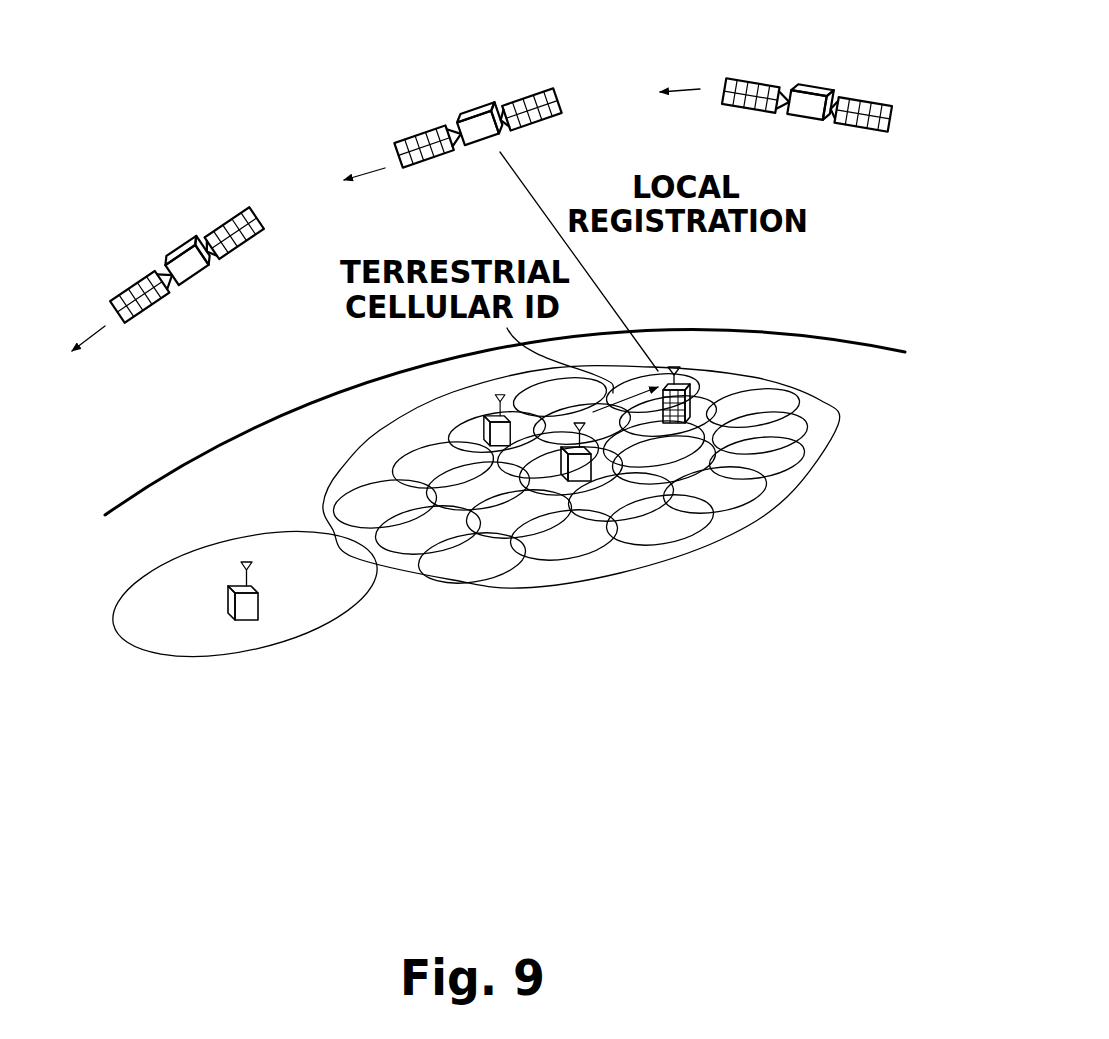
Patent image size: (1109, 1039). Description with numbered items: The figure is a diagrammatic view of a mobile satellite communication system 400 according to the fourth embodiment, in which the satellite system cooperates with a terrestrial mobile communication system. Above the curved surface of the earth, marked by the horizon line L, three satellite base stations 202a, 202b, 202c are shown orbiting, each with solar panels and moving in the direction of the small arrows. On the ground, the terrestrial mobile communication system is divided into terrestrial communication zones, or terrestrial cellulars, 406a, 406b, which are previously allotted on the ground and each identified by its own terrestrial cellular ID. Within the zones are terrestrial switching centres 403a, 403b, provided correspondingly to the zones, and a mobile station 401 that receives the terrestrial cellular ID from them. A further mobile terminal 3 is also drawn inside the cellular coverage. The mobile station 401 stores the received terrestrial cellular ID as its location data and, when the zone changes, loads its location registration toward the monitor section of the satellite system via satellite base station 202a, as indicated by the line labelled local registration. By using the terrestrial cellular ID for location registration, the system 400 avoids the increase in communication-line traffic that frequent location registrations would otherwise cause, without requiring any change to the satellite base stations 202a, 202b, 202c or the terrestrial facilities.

The satellite base station 202a is at (479, 106).
The satellite base station 202b is at (808, 88).
The satellite base station 202c is at (186, 240).
The horizon line L is at (886, 352).
The mobile terminal 3 is at (438, 421).
The mobile station 401 is at (812, 408).
The terrestrial switching centre 403a is at (589, 483).
The terrestrial switching centre 403b is at (229, 584).
The terrestrial communication zone 406a is at (773, 520).
The terrestrial communication zone 406b is at (330, 623).
The mobile satellite communication system 400 is at (291, 791).